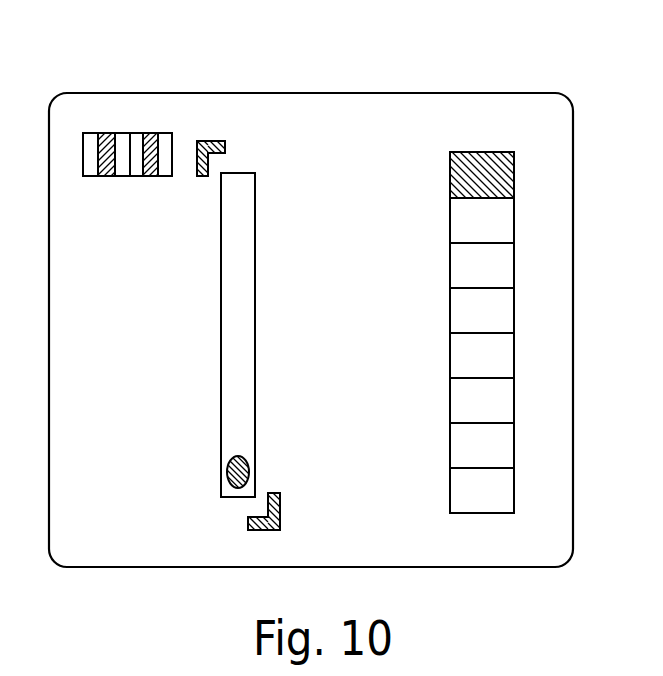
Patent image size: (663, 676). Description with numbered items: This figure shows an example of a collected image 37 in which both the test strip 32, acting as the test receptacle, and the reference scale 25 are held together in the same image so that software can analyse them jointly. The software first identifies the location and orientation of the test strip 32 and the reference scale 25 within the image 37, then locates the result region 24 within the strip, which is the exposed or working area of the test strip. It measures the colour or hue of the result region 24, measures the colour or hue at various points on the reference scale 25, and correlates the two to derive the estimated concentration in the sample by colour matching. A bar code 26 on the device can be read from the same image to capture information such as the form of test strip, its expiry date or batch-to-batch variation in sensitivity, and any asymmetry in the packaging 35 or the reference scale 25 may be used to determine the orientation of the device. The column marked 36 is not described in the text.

The result region 24 is at (228, 471).
The reference scale 25 is at (480, 513).
The bar code 26 is at (123, 131).
The test strip 32 is at (220, 308).
The packaging 35 is at (211, 140).
The indicator column 36 is at (493, 151).
The image 37 is at (412, 130).